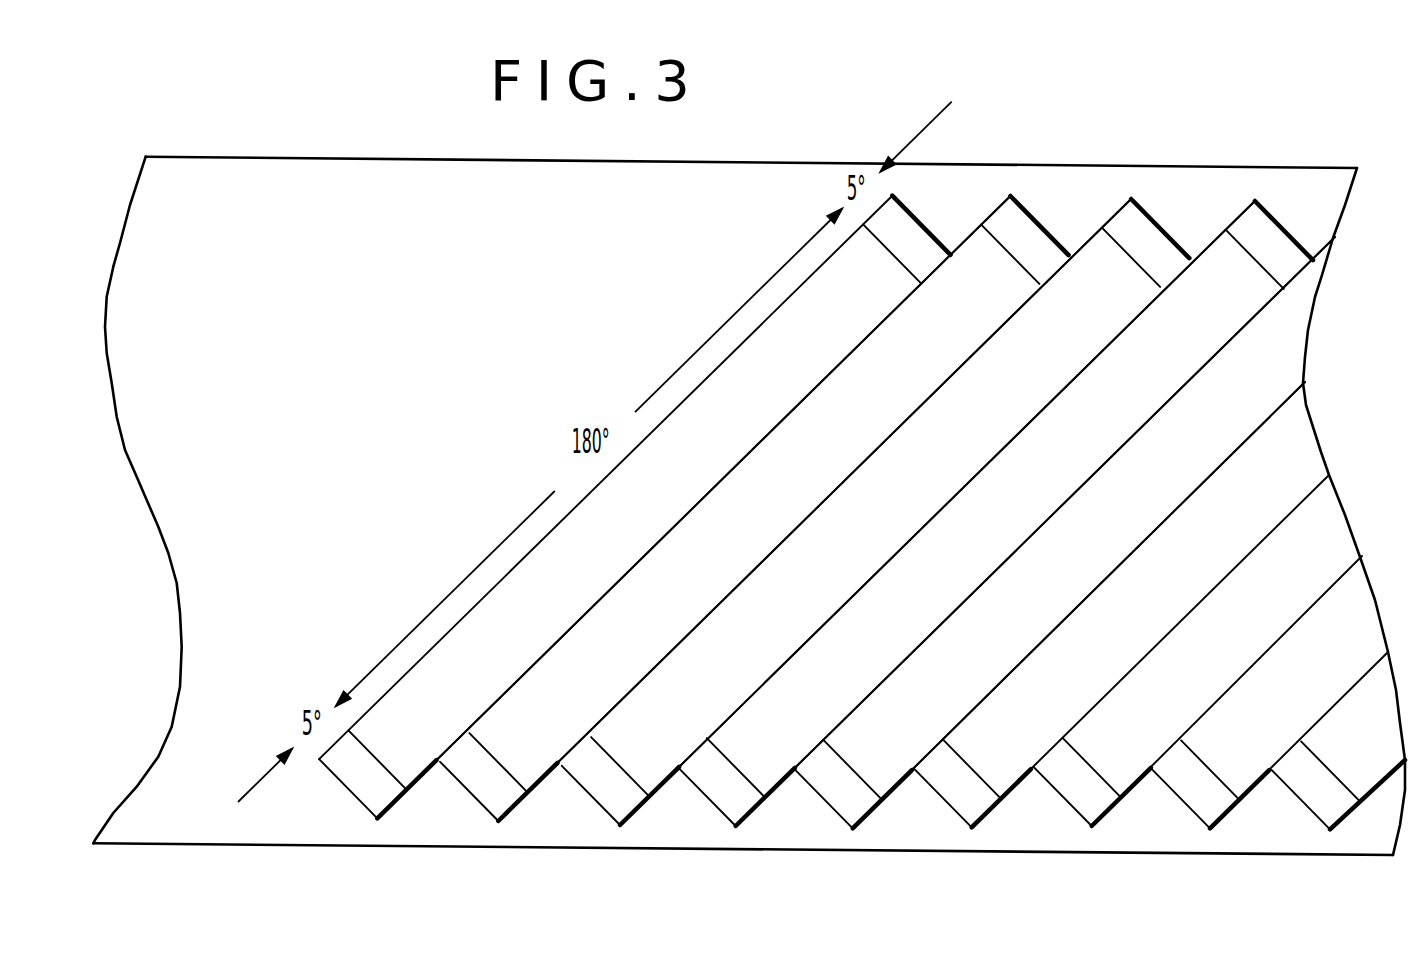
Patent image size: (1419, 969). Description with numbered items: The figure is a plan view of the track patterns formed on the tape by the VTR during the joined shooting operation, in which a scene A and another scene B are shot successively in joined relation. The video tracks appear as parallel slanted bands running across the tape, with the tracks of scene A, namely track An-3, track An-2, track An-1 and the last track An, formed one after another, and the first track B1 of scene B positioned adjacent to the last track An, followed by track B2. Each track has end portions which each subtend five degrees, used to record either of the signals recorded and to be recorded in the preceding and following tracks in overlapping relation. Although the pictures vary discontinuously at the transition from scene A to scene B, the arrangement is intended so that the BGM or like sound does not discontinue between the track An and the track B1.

The track B2 is at (664, 507).
The first track of scene B B1 is at (754, 508).
The last track of scene A An is at (876, 512).
The track An-1 is at (977, 513).
The track An-2 is at (1035, 532).
The track An-3 is at (1091, 605).